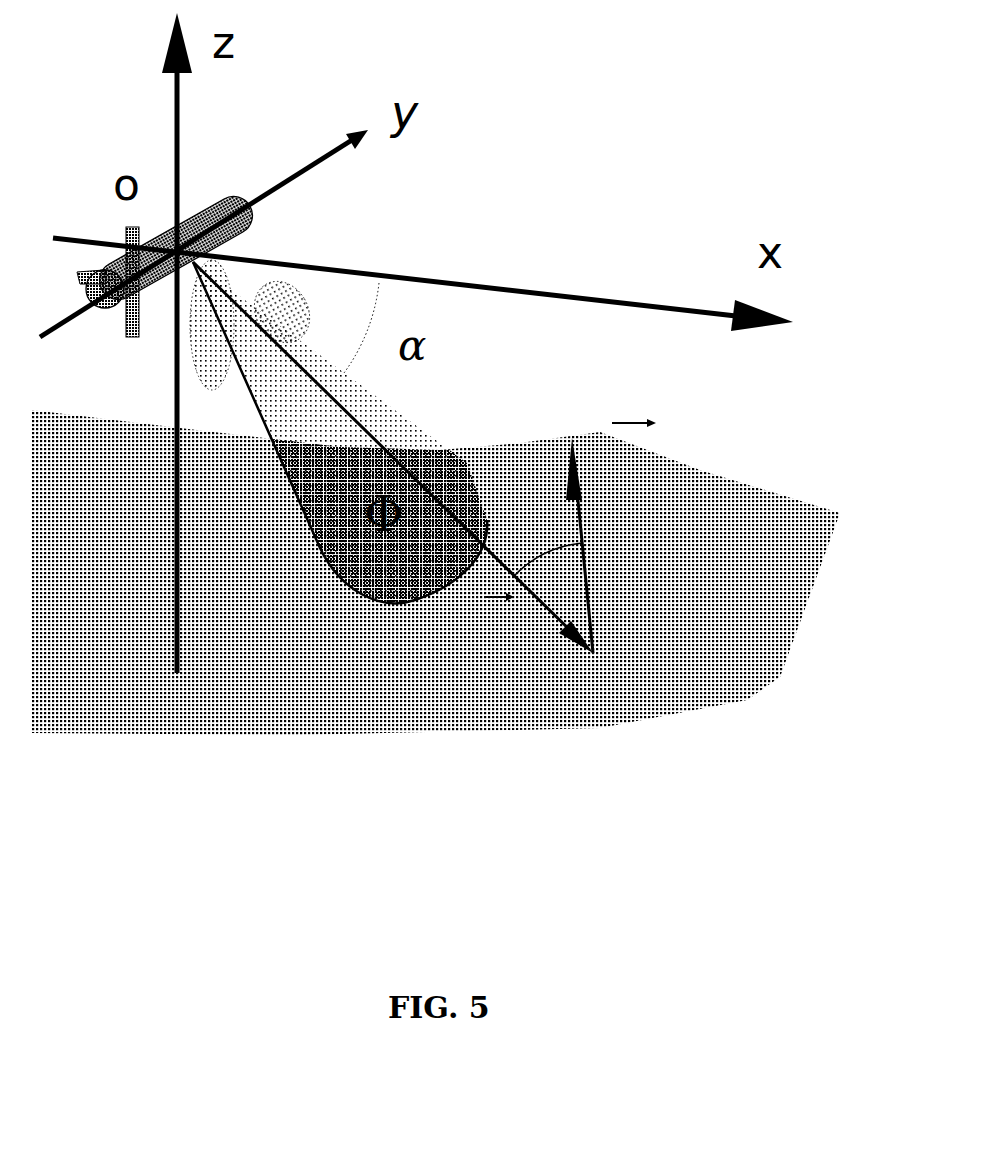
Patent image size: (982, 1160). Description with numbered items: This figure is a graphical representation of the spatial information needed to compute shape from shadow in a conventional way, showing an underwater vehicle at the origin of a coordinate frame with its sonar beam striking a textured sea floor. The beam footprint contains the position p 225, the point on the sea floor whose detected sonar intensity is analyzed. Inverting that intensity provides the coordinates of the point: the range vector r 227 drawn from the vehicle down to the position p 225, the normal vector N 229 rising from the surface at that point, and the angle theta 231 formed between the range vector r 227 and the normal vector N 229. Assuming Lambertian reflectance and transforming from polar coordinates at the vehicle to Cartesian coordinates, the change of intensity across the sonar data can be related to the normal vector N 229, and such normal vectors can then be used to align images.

The position p 225 is at (672, 662).
The coordinate r 227 is at (483, 640).
The normal vector N 229 is at (657, 442).
The angle θ 231 is at (505, 480).